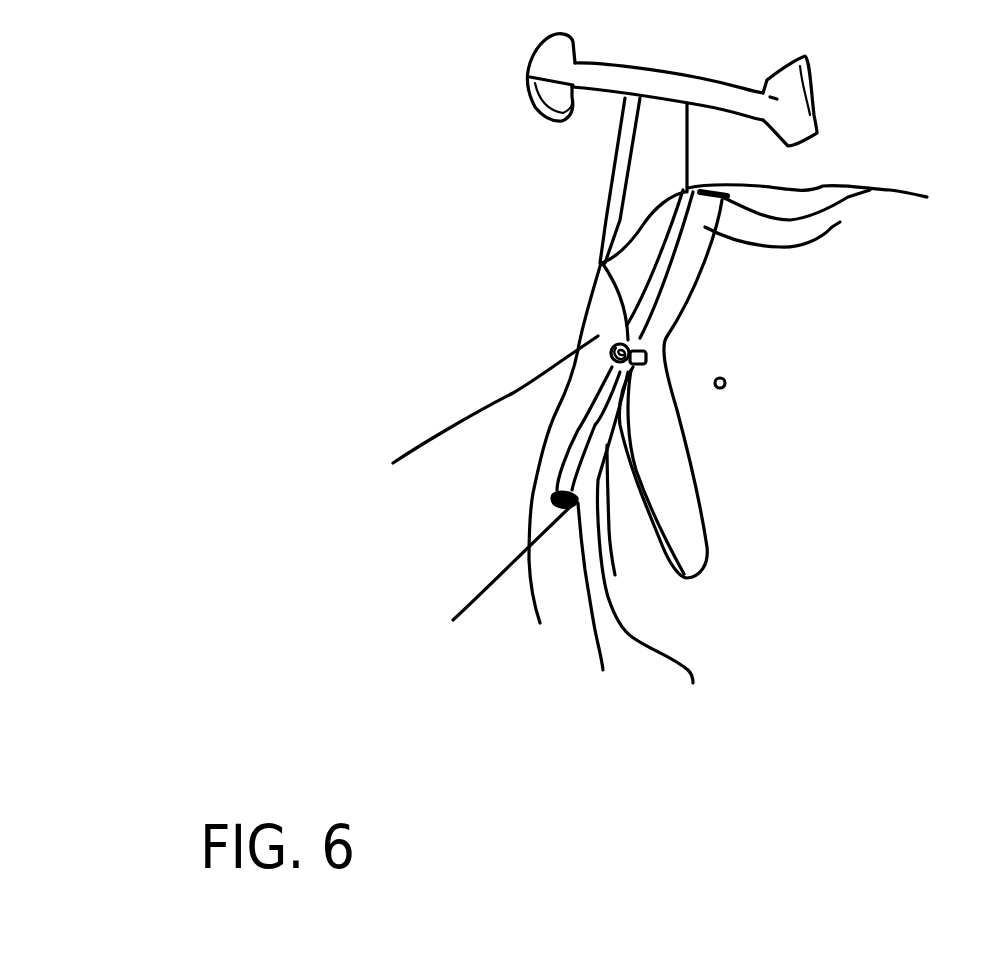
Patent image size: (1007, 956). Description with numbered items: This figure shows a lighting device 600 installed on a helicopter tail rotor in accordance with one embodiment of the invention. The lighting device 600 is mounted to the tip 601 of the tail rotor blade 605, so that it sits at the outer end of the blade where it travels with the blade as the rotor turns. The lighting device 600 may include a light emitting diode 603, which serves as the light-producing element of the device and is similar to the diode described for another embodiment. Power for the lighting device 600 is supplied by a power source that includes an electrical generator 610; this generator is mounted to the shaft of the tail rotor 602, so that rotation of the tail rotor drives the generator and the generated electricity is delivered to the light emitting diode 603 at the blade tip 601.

The lighting device 600 is at (602, 263).
The tip 601 is at (790, 460).
The tail rotor 602 is at (725, 381).
The light emitting diode 603 is at (827, 186).
The tail rotor blade 605 is at (755, 406).
The electrical generator 610 is at (565, 468).